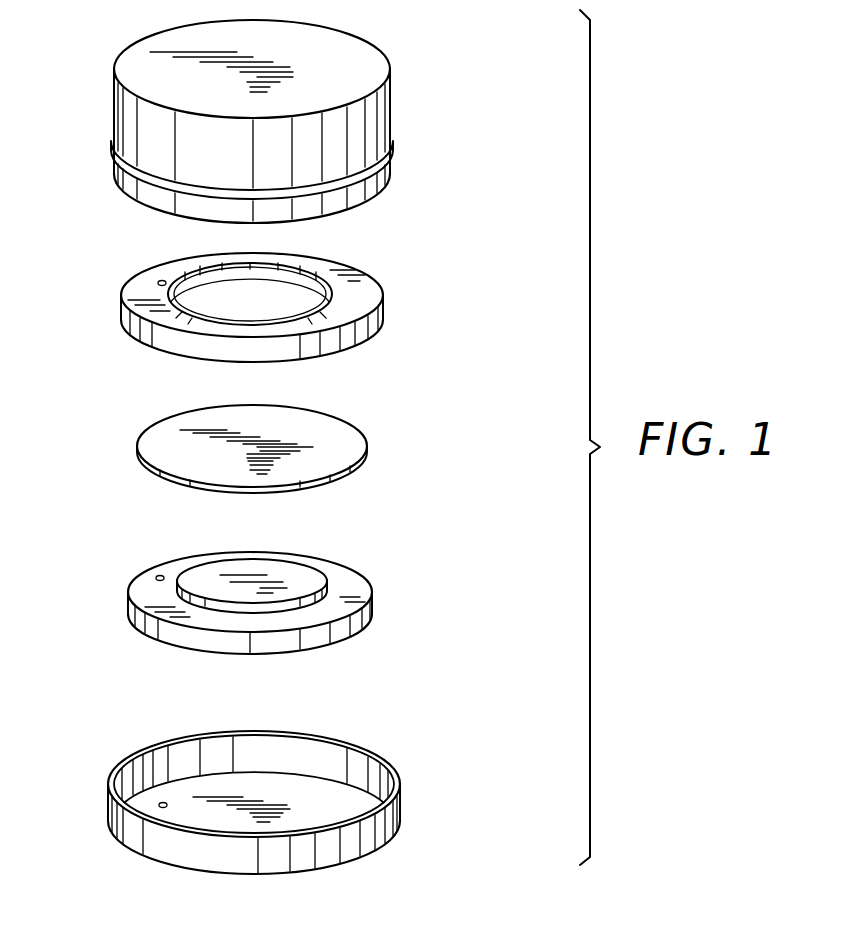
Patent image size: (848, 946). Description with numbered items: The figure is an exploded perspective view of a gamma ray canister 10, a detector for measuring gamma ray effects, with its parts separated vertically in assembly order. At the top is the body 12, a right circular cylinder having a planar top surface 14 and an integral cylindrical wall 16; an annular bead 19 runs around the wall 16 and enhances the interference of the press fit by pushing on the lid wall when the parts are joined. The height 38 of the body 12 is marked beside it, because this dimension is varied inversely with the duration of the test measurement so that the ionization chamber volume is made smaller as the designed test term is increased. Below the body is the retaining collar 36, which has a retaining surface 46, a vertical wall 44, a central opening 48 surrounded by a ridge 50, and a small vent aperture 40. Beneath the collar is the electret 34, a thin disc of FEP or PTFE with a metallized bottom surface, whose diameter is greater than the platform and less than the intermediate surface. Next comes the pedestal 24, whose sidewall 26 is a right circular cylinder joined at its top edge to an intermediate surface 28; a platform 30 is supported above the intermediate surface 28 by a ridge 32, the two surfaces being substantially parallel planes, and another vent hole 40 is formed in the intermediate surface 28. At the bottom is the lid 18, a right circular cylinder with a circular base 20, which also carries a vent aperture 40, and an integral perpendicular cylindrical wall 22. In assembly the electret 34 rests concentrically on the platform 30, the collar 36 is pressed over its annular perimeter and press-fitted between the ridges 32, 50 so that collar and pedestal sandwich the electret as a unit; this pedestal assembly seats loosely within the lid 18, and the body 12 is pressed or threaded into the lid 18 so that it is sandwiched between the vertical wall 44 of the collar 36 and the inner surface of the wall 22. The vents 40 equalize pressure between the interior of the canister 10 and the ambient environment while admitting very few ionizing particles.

The gamma ray canister 10 is at (97, 57).
The body 12 is at (291, 121).
The planar top surface 14 is at (343, 45).
The cylindrical wall 16 is at (393, 127).
The annular bead 19 is at (393, 146).
The height 38 is at (73, 70).
The retaining collar 36 is at (285, 310).
The apertures 40 is at (158, 280).
The vertical wall 44 is at (332, 345).
The retaining surface 46 is at (348, 279).
The central opening 48 is at (258, 292).
The ridge 50 is at (188, 312).
The electret 34 is at (337, 440).
The pedestal 24 is at (275, 596).
The sidewall 26 is at (130, 615).
The intermediate surface 28 is at (335, 572).
The platform 30 is at (262, 582).
The ridge 32 is at (338, 594).
The lid 18 is at (292, 804).
The circular base 20 is at (264, 790).
The cylindrical wall 22 is at (285, 862).